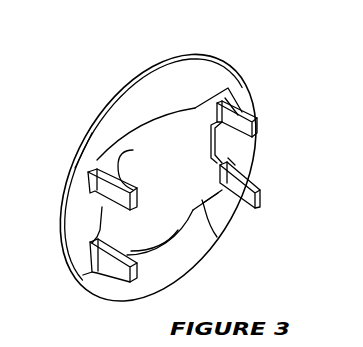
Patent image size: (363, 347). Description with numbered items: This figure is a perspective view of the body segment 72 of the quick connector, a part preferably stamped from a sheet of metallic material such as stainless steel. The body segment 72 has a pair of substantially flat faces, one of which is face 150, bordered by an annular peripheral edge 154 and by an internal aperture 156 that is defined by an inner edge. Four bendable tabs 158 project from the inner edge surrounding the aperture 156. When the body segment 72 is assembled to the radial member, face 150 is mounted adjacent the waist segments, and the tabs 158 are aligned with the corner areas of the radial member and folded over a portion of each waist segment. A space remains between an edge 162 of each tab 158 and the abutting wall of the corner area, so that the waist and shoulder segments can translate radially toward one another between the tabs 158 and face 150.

The body segment 72 is at (80, 83).
The face 150 is at (116, 124).
The annular peripheral edge 154 is at (160, 66).
The internal aperture 156 is at (178, 178).
The bendable tabs 158 is at (258, 113).
The edge 162 is at (121, 156).